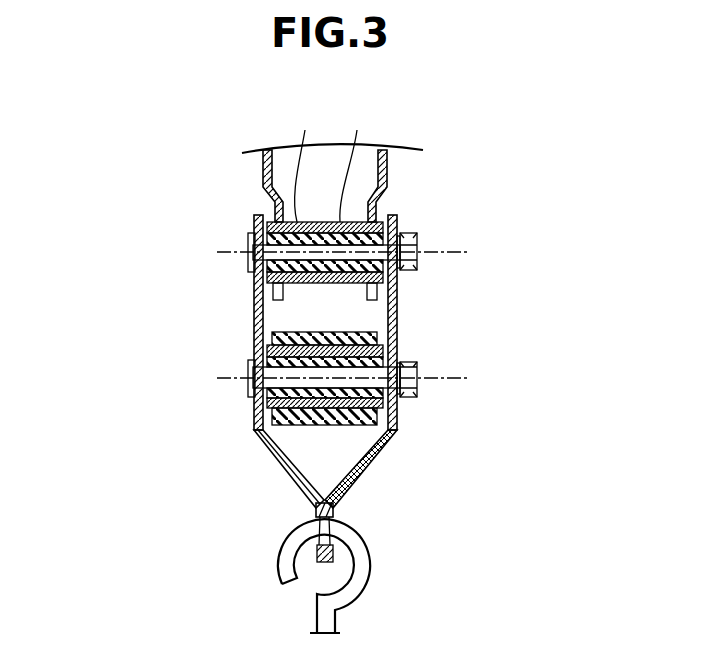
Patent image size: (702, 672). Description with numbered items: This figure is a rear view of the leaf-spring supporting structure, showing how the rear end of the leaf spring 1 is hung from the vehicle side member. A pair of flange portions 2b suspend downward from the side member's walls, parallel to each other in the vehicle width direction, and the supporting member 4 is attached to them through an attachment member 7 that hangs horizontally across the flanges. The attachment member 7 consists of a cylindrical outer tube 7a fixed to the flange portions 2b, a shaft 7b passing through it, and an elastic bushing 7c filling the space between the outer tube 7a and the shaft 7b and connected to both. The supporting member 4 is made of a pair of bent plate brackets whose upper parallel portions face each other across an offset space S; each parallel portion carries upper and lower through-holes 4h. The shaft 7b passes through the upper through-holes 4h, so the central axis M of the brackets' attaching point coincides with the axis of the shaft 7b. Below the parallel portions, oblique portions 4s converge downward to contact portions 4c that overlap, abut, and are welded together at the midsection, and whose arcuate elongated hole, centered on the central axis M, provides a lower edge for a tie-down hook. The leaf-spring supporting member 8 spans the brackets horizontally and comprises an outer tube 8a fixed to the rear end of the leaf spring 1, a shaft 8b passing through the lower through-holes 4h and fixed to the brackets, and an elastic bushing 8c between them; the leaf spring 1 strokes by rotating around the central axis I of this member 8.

The leaf spring 1 is at (278, 460).
The flange portions 2b is at (263, 172).
The supporting member 4 is at (315, 416).
The oblique portions 4s is at (280, 470).
The contact portions 4c is at (315, 507).
The through-holes 4h is at (250, 266).
The attachment member 7 is at (286, 164).
The outer tube 7a is at (356, 164).
The shaft 7b is at (260, 233).
The bushing 7c is at (298, 164).
The leaf-spring supporting member 8 is at (320, 393).
The outer tube 8a is at (262, 412).
The shaft 8b is at (404, 360).
The bushing 8c is at (254, 396).
The offset space S is at (295, 315).
The central axis M is at (470, 250).
The central axis I is at (470, 376).